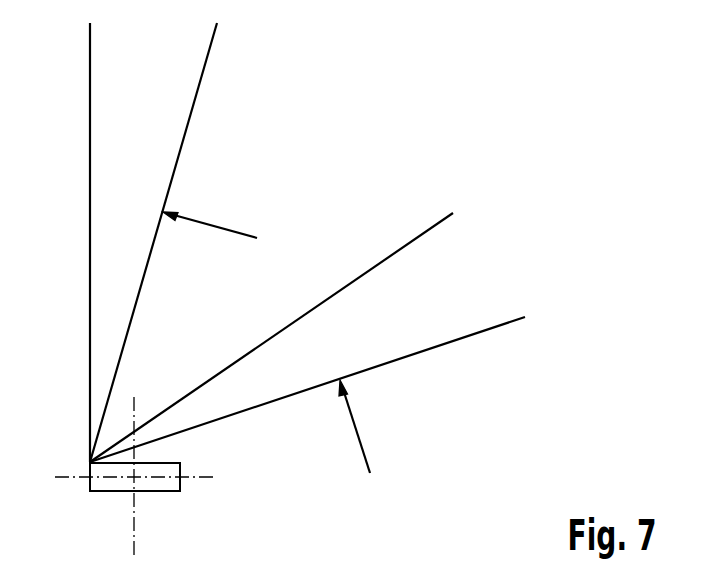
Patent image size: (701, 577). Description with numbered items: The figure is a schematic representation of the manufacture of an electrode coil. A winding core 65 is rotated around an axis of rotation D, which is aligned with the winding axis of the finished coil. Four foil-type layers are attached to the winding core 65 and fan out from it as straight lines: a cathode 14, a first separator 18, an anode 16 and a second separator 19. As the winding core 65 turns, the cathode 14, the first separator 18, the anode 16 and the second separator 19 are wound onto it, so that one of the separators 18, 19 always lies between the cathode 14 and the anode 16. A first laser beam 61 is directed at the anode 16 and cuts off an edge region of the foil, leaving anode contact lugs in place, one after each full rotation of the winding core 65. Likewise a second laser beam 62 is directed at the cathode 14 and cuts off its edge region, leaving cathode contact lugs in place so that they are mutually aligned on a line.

The second separator 19 is at (90, 104).
The anode 16 is at (198, 105).
The first separator 18 is at (375, 265).
The cathode 14 is at (445, 347).
The first laser beam 61 is at (218, 222).
The second laser beam 62 is at (358, 435).
The winding core 65 is at (163, 492).
The axis of rotation D is at (133, 477).